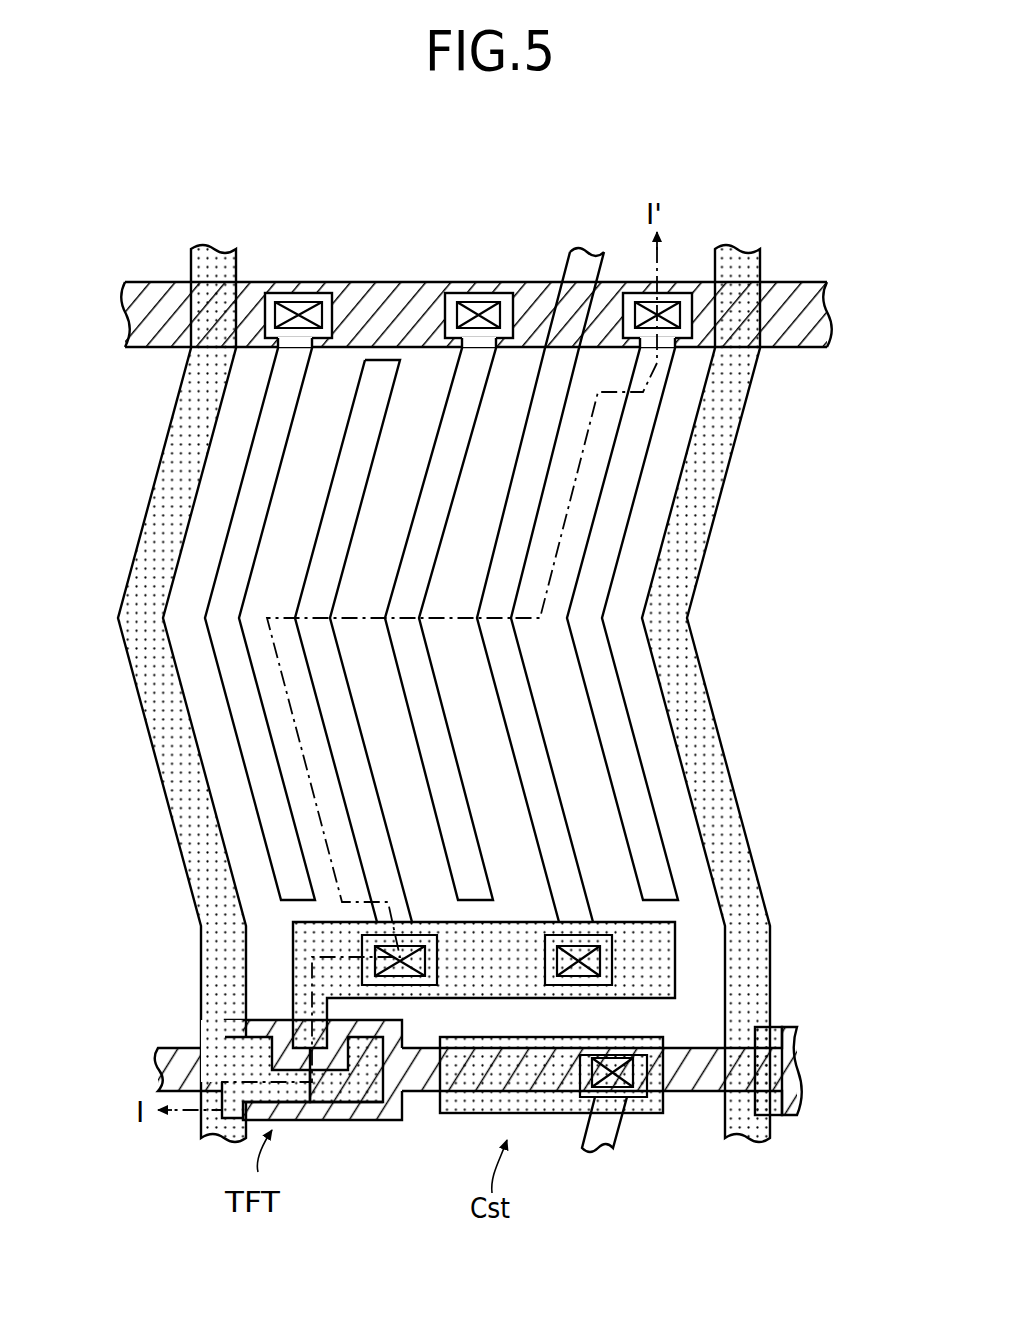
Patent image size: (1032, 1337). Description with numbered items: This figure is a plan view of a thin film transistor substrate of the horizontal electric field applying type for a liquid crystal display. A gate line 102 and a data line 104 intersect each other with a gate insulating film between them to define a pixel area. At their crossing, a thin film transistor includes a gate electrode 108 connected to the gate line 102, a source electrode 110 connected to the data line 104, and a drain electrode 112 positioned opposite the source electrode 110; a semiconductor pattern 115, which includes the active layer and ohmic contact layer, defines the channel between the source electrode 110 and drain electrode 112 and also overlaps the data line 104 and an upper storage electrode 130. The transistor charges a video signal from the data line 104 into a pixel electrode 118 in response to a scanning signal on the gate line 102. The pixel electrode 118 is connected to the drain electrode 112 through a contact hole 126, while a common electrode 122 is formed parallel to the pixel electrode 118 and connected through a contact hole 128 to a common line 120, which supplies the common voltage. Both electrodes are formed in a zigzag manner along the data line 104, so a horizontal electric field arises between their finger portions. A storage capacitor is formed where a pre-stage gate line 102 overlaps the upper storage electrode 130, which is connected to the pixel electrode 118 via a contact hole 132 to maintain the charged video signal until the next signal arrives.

The gate line 102 is at (692, 1074).
The data line 104 is at (135, 712).
The gate electrode 108 is at (353, 1113).
The source electrode 110 is at (303, 1093).
The drain electrode 112 is at (310, 1032).
The semiconductor pattern 115 is at (333, 1053).
The pixel electrode 118 is at (362, 418).
The common line 120 is at (803, 300).
The common electrode 122 is at (410, 517).
The contact hole 126 is at (300, 947).
The contact hole 128 is at (302, 300).
The upper storage electrode 130 is at (552, 1115).
The contact hole 132 is at (617, 1090).